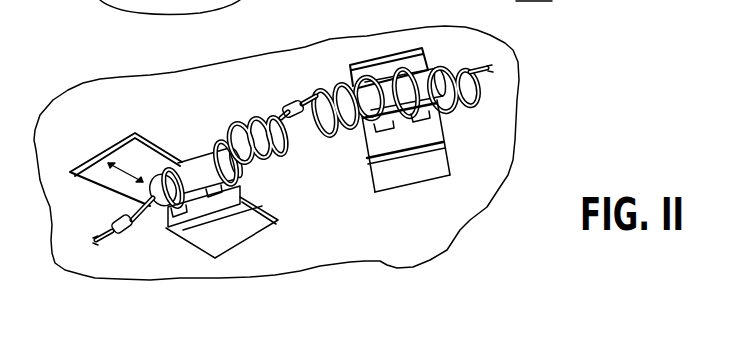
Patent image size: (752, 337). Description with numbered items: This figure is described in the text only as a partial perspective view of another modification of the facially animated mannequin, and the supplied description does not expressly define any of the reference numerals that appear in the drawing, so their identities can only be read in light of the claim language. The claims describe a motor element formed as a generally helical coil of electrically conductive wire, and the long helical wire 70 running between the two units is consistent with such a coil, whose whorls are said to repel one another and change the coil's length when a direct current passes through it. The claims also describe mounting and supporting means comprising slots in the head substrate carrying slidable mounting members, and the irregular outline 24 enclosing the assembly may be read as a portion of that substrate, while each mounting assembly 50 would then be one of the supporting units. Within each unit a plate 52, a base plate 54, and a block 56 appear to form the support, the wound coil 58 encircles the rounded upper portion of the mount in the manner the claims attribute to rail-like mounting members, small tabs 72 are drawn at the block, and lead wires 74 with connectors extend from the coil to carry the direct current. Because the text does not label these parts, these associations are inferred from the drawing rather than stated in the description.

The panel 24 is at (371, 250).
The hinge assembly 50 is at (125, 166).
The mounting plate 52 is at (147, 143).
The base plate 54 is at (218, 245).
The housing block 56 is at (163, 217).
The coil on cylinder 58 is at (212, 155).
The helical spring 70 is at (232, 123).
The tab 72 is at (220, 193).
The lead wire 74 is at (117, 216).